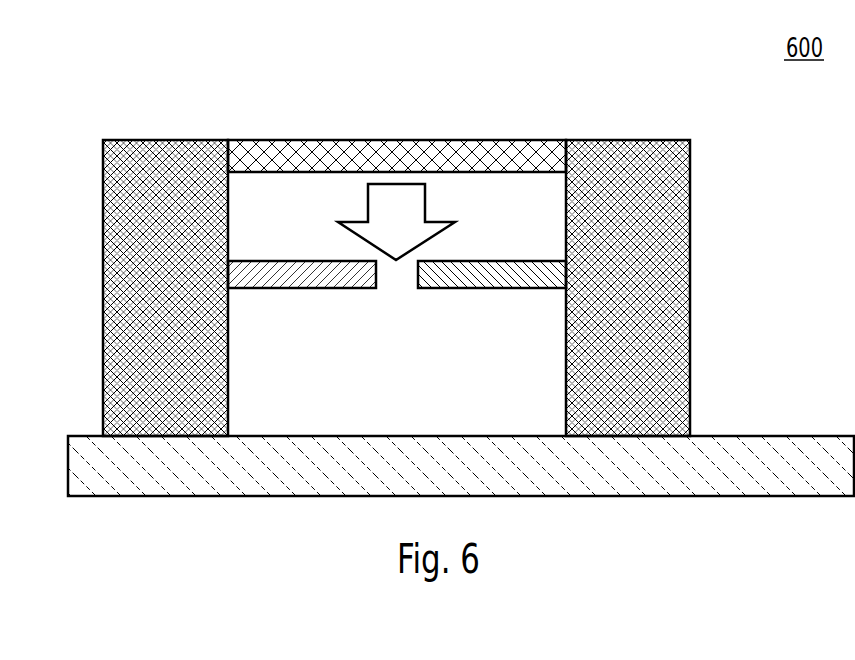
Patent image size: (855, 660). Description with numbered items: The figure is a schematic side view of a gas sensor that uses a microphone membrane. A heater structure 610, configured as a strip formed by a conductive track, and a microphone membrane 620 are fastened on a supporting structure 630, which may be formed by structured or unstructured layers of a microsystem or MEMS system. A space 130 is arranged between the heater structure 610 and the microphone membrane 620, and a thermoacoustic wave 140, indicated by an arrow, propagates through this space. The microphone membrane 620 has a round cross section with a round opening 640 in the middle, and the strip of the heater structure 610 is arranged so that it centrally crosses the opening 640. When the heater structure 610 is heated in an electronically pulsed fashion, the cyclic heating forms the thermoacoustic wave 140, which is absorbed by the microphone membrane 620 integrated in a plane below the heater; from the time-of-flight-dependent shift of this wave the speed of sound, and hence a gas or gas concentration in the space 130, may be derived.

The heater structure 610 is at (394, 140).
The space 130 is at (493, 208).
The thermoacoustic wave 140 is at (368, 210).
The microphone membrane 620 is at (305, 289).
The supporting structure 630 is at (690, 284).
The opening 640 is at (493, 289).